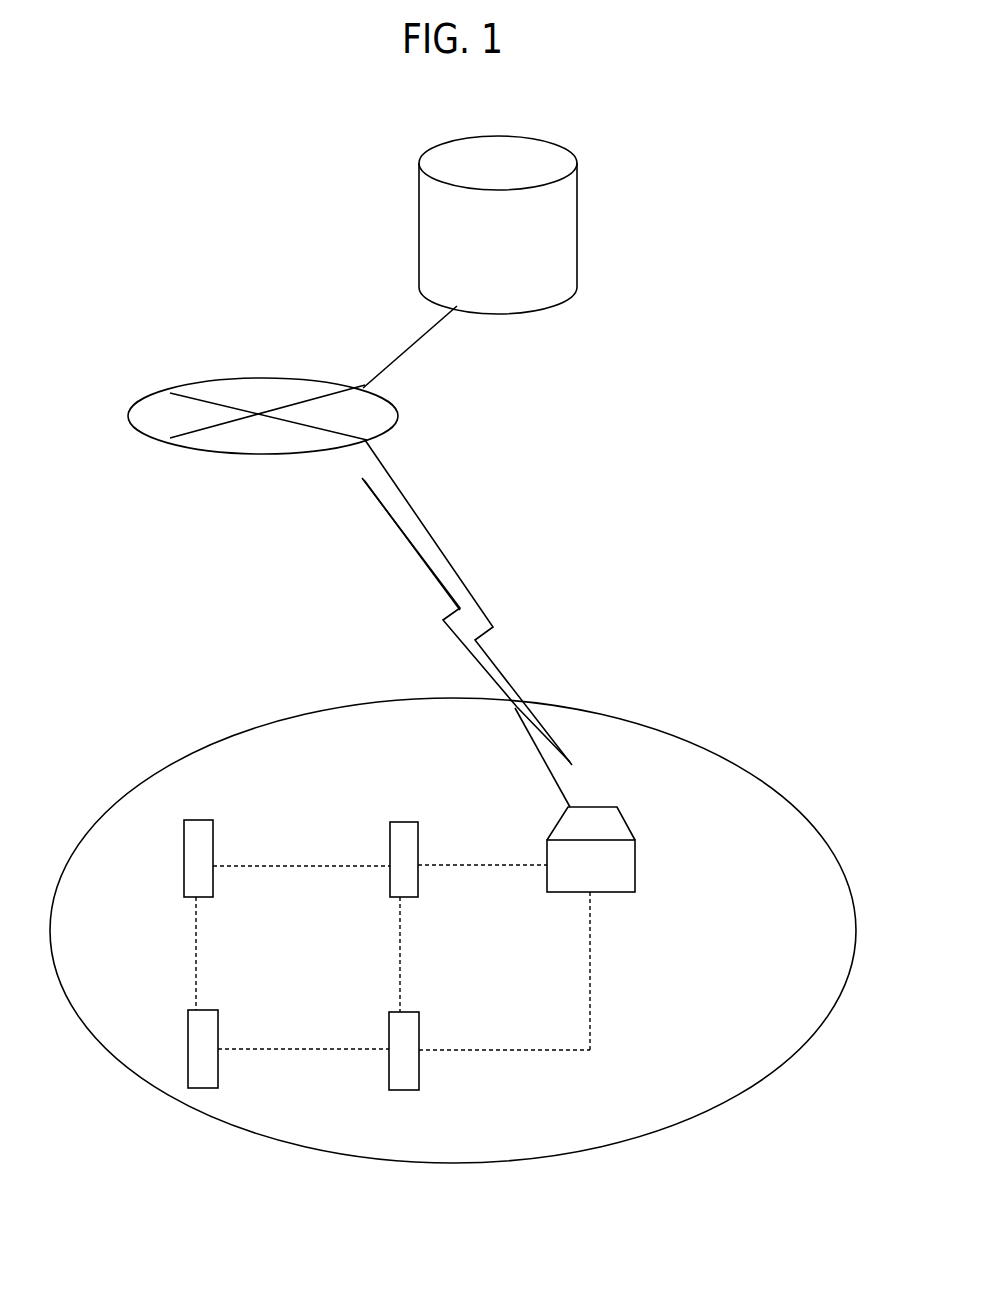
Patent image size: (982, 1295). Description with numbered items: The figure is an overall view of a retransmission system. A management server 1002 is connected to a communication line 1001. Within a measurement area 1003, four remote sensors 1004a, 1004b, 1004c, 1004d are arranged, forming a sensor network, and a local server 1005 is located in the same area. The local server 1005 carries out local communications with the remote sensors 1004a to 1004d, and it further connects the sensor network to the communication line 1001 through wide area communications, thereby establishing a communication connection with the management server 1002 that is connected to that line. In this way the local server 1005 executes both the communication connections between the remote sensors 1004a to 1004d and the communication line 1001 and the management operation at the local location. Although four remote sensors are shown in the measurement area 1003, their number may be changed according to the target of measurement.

The communication line 1001 is at (190, 385).
The management server 1002 is at (530, 137).
The measurement area 1003 is at (617, 717).
The remote sensor 1004a is at (188, 820).
The remote sensor 1004b is at (397, 822).
The remote sensor 1004c is at (412, 1012).
The remote sensor 1004d is at (207, 1010).
The local server 1005 is at (590, 812).